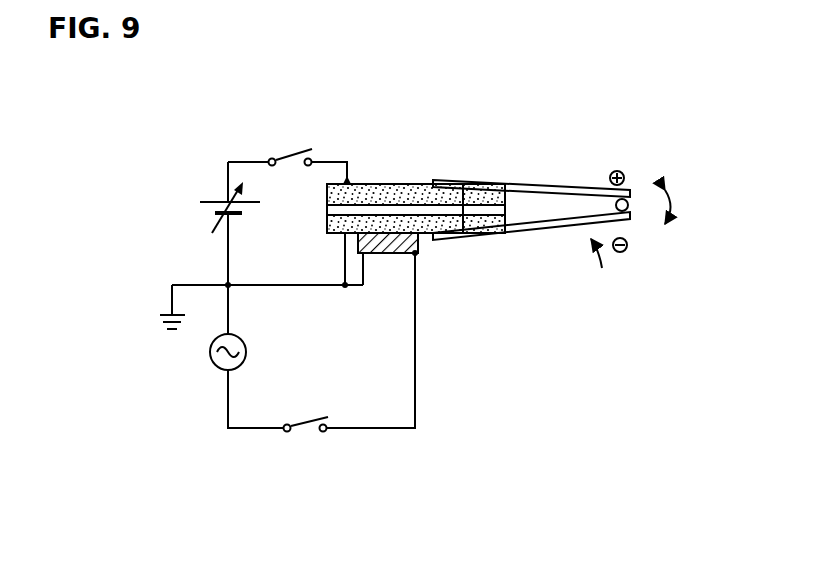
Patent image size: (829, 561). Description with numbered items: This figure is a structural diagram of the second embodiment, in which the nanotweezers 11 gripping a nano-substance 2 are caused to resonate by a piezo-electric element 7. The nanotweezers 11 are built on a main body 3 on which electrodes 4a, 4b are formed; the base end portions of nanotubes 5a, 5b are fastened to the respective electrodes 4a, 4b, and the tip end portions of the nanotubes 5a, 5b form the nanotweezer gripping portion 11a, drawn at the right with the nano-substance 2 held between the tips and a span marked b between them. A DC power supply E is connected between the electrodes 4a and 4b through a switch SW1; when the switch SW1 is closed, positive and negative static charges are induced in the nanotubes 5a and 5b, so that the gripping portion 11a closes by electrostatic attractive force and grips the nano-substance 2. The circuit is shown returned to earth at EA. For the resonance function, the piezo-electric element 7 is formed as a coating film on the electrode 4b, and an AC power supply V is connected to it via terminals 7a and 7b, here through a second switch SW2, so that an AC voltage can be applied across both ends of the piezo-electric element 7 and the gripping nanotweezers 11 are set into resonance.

The nanotweezers 11 is at (455, 87).
The nanotweezer gripping portion 11a is at (611, 269).
The nano-substance 2 is at (630, 199).
The main body 3 is at (327, 214).
The electrode 4a is at (397, 184).
The electrode 4b is at (463, 184).
The nanotube 5a is at (548, 180).
The nanotube 5b is at (550, 240).
The piezo-electric element 7 is at (392, 255).
The terminal 7a is at (378, 255).
The terminal 7b is at (418, 257).
The gap width b is at (679, 207).
The DC power supply E is at (212, 202).
The earth (ground) EA is at (163, 315).
The AC power supply V is at (216, 372).
The switch SW1 is at (300, 160).
The switch 2 SW2 is at (305, 433).